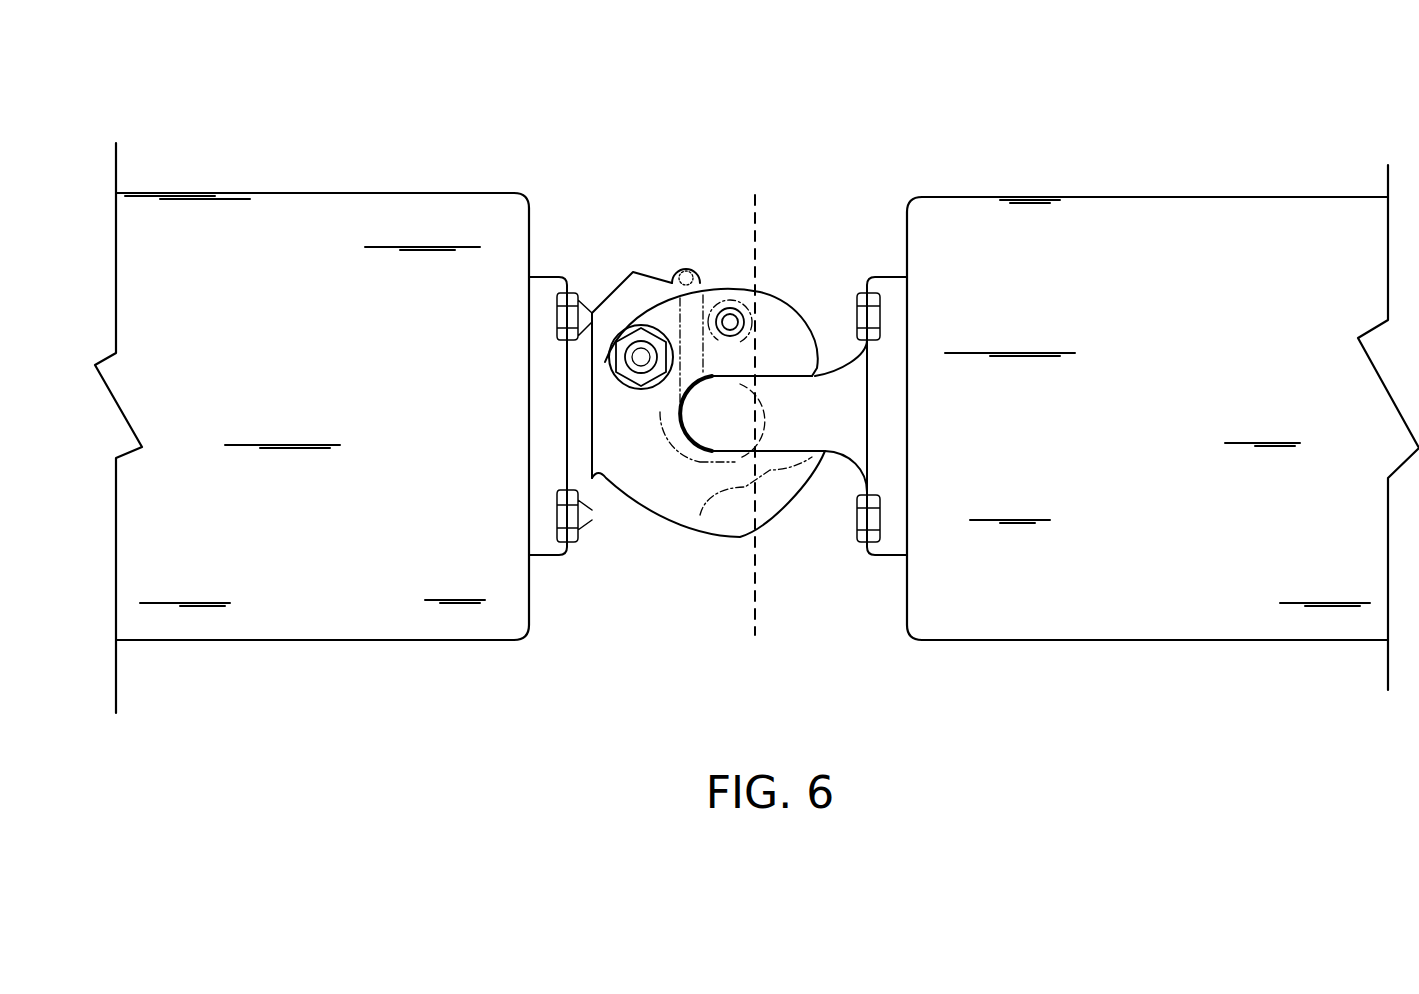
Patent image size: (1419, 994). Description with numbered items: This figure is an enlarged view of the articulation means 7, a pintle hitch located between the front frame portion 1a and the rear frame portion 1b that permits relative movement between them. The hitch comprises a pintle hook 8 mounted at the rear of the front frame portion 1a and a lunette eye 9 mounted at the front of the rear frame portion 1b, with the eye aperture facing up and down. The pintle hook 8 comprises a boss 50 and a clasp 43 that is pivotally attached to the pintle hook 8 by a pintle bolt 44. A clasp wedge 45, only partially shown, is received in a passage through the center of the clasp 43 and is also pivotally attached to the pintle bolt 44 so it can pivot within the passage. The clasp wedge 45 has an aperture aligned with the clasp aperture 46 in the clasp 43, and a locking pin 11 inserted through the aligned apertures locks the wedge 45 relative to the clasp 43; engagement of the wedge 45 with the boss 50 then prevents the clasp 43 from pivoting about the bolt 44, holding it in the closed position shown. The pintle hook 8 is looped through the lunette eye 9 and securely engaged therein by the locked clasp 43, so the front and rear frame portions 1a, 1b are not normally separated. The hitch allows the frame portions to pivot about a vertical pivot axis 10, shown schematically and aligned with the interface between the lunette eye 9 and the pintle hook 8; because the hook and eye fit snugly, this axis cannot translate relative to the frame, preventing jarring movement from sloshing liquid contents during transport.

The front frame portion 1a is at (317, 222).
The rear frame portion 1b is at (1187, 245).
The articulation means 7 is at (718, 398).
The pintle hook 8 is at (783, 487).
The lunette eye 9 is at (857, 386).
The vertical pivot axis 10 is at (764, 216).
The locking pin 11 is at (736, 313).
The clasp 43 is at (779, 340).
The pintle bolt 44 is at (640, 355).
The clasp wedge 45 is at (670, 282).
The clasp aperture 46 is at (727, 312).
The boss 50 is at (635, 293).